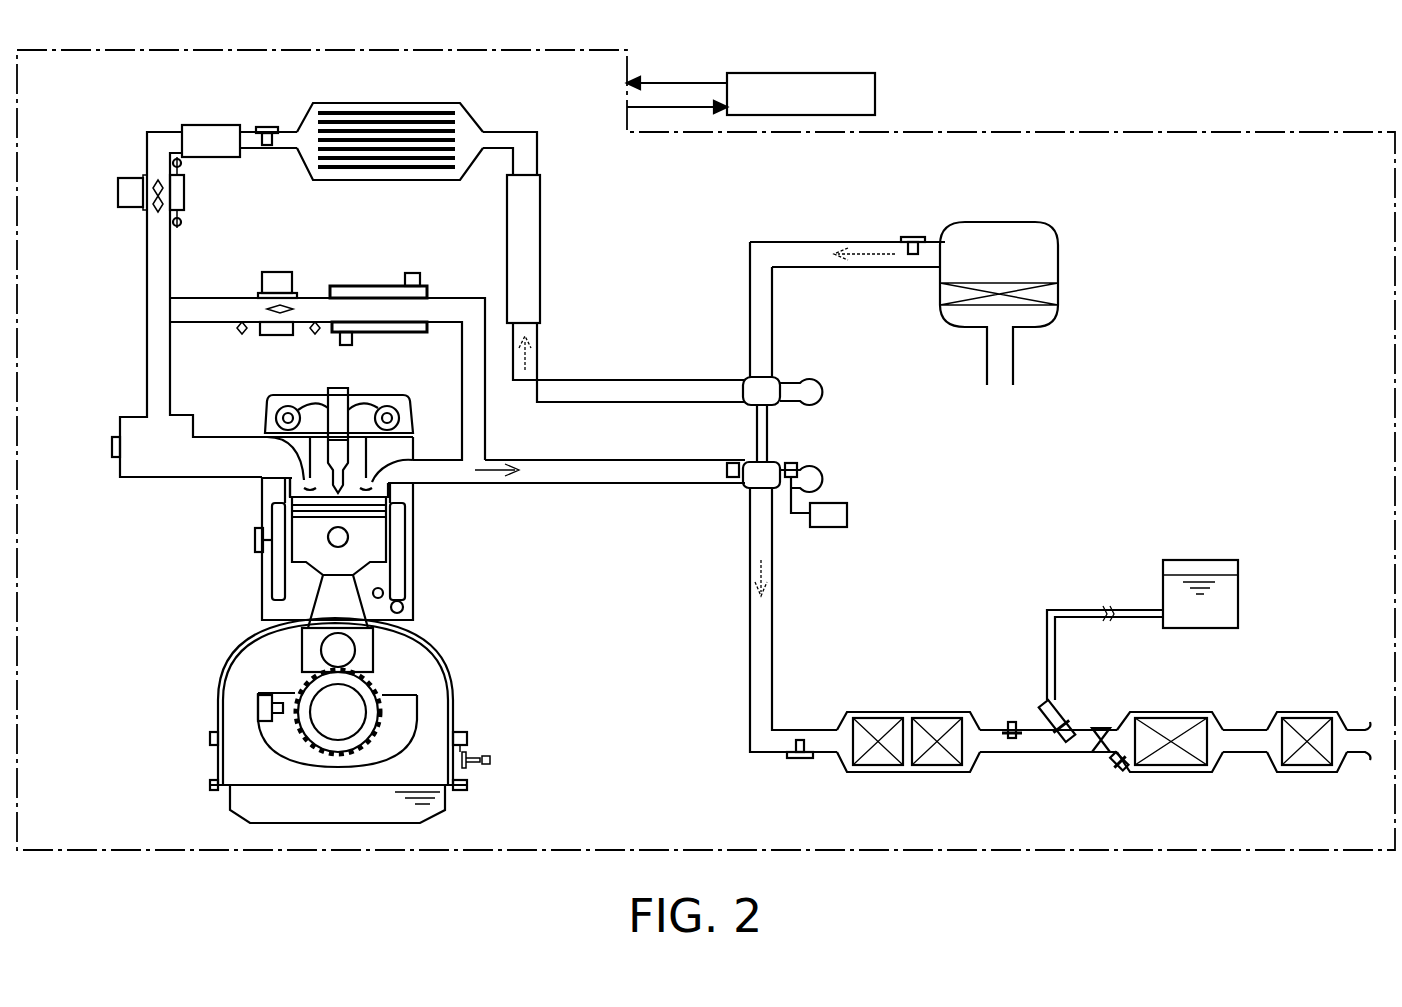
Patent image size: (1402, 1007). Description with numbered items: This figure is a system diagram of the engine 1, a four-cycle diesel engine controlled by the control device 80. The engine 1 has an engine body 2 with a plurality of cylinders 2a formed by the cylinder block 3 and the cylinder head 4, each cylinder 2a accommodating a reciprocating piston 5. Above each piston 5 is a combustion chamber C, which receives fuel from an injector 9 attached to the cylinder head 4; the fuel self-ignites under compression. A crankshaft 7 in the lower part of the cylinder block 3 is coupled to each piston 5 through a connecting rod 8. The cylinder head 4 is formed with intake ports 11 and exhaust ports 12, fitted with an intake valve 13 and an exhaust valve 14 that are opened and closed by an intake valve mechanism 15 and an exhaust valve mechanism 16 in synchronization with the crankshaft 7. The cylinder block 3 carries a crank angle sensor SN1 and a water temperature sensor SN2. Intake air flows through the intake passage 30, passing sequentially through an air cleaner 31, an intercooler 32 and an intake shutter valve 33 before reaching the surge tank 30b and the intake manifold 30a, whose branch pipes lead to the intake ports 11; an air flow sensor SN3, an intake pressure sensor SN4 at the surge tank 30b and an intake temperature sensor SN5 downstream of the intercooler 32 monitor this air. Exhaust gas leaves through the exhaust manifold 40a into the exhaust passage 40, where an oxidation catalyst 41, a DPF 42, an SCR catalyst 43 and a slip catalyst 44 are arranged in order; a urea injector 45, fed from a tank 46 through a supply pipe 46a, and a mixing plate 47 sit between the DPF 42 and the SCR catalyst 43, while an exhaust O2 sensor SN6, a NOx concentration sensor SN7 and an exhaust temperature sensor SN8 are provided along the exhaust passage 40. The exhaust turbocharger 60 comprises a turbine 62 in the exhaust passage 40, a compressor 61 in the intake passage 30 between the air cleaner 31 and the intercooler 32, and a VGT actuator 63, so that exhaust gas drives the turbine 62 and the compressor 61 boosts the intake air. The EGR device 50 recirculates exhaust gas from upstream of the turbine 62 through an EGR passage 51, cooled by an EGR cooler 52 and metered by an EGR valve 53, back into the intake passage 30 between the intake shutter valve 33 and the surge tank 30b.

The engine 1 is at (1318, 128).
The engine body 2 is at (315, 596).
The cylinder 2a is at (404, 606).
The cylinder block 3 is at (352, 548).
The cylinder head 4 is at (353, 420).
The piston 5 is at (298, 565).
The crankshaft 7 is at (350, 717).
The connecting rod 8 is at (310, 640).
The injector 9 is at (342, 395).
The intake port 11 is at (290, 486).
The exhaust port 12 is at (400, 472).
The intake valve 13 is at (288, 512).
The exhaust valve 14 is at (350, 500).
The intake valve mechanism 15 is at (286, 404).
The exhaust valve mechanism 16 is at (389, 406).
The intake passage 30 is at (145, 350).
The intake manifold 30a is at (212, 478).
The surge tank 30b is at (138, 475).
The air cleaner 31 is at (1008, 222).
The intercooler 32 is at (457, 105).
The intake shutter valve 33 is at (153, 188).
The exhaust passage 40 is at (748, 680).
The exhaust manifold 40a is at (425, 486).
The oxidation catalyst 41 is at (878, 768).
The DPF 42 is at (935, 768).
The SCR catalyst 43 is at (1172, 768).
The slip catalyst 44 is at (1307, 768).
The urea injector 45 is at (1055, 712).
The tank 46 is at (1238, 592).
The supply pipe 46a is at (1075, 609).
The mixing plate 47 is at (1100, 727).
The EGR device 50 is at (327, 323).
The EGR passage 51 is at (442, 305).
The EGR cooler 52 is at (362, 297).
The EGR valve 53 is at (268, 308).
The exhaust turbocharger 60 is at (792, 483).
The compressor 61 is at (750, 398).
The turbine 62 is at (750, 478).
The VGT actuator 63 is at (828, 528).
The control device 80 is at (855, 72).
The combustion chamber C is at (355, 525).
The crank angle sensor SN1 is at (258, 708).
The water temperature sensor SN2 is at (255, 542).
The air flow sensor SN3 is at (912, 236).
The intake pressure sensor SN4 is at (112, 446).
The intake temperature sensor SN5 is at (266, 126).
The exhaust O2 sensor SN6 is at (800, 760).
The NOx concentration sensor SN7 is at (1010, 722).
The exhaust temperature sensor SN8 is at (1120, 770).